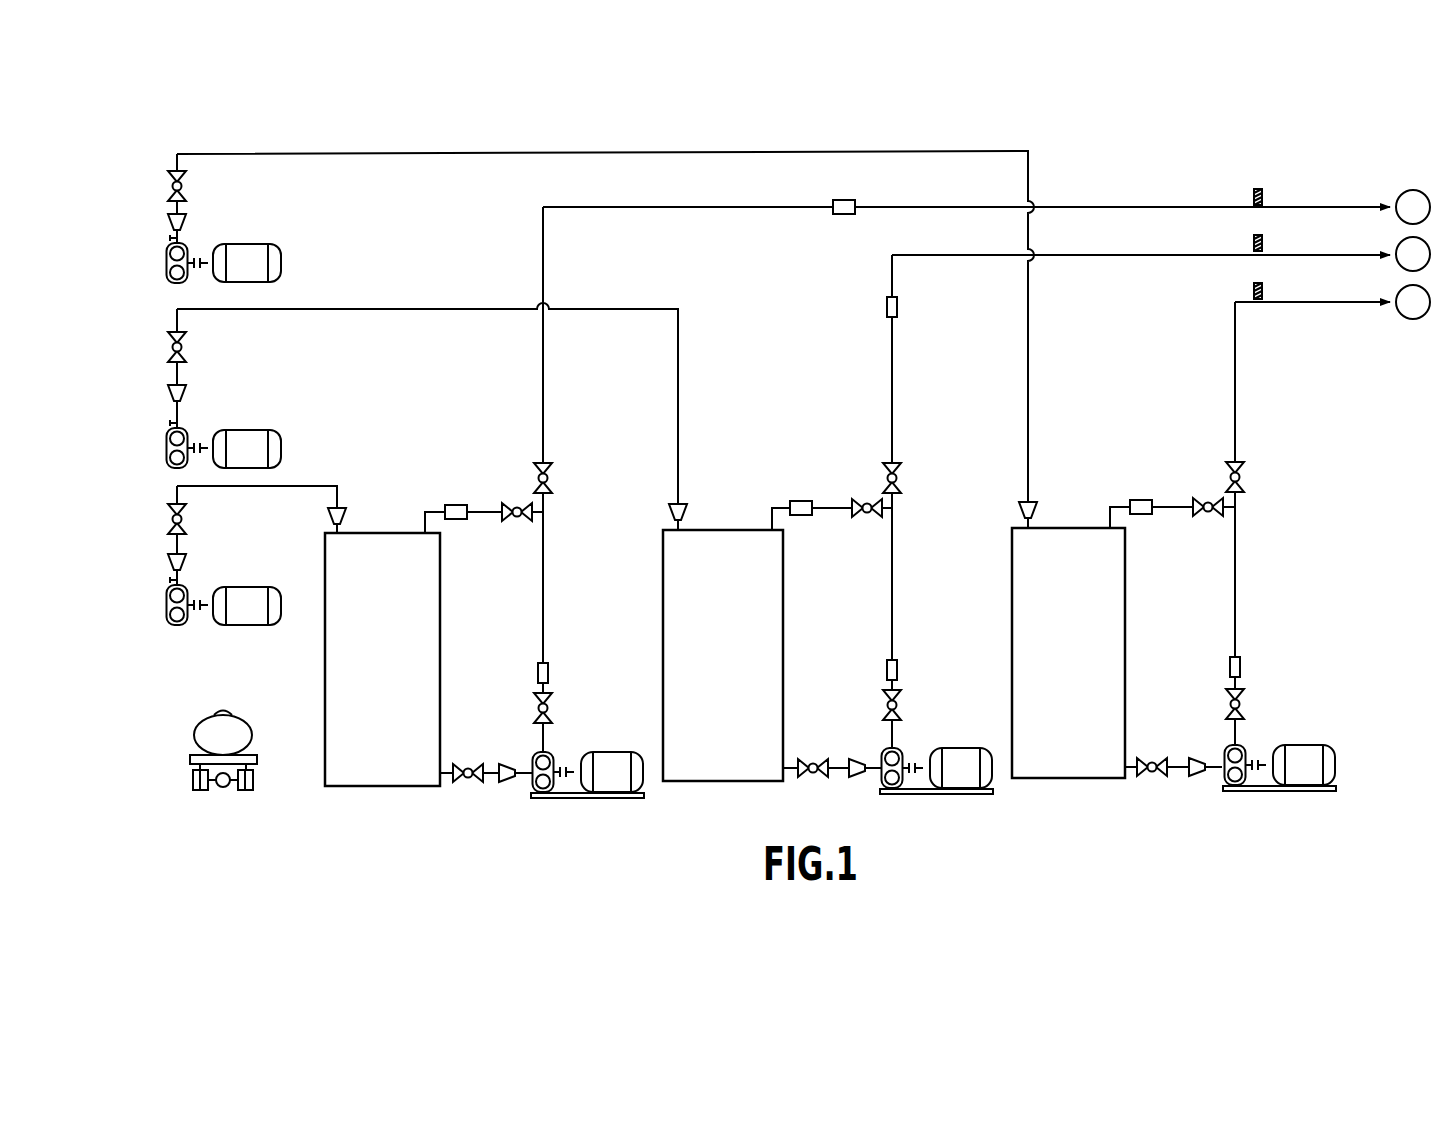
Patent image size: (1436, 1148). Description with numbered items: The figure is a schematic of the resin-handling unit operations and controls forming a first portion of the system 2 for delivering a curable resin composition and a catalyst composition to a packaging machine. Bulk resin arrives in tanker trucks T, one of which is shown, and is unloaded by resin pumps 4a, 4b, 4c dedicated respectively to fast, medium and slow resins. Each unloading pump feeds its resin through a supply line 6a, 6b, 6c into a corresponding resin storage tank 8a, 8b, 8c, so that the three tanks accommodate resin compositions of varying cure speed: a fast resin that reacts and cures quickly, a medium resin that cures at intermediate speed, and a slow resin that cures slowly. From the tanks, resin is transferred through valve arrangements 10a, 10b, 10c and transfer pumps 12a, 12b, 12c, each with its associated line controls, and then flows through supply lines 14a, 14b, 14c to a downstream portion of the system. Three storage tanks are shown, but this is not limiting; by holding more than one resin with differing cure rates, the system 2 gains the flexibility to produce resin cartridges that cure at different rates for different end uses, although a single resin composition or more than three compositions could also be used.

The system 2 is at (792, 464).
The resin pump 4a is at (243, 587).
The resin pump 4b is at (281, 446).
The resin pump 4c is at (281, 261).
The supply line 6a is at (258, 488).
The supply line 6b is at (333, 311).
The supply line 6c is at (444, 155).
The resin storage tank 8a is at (373, 788).
The resin storage tank 8b is at (718, 782).
The resin storage tank 8c is at (1056, 780).
The valve arrangement 10a is at (475, 752).
The valve arrangement 10b is at (870, 706).
The valve arrangement 10c is at (1157, 748).
The pump 12a is at (608, 787).
The pump 12b is at (958, 783).
The pump 12c is at (1298, 780).
The supply line 14a is at (1131, 205).
The supply line 14b is at (1143, 257).
The supply line 14c is at (1237, 372).
The tanker truck T is at (251, 728).